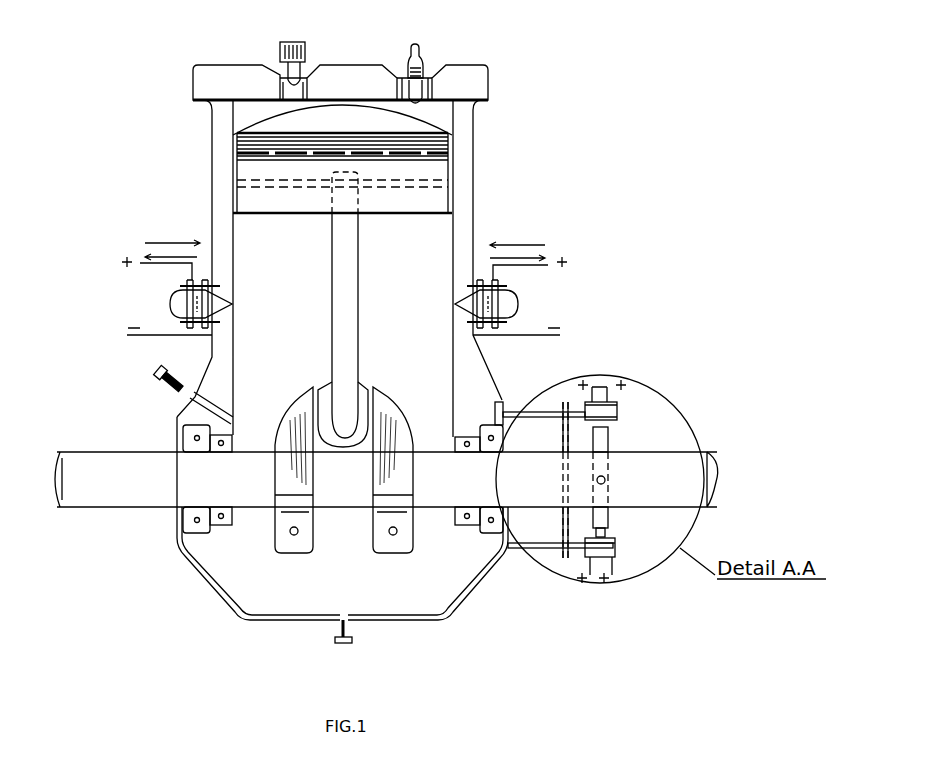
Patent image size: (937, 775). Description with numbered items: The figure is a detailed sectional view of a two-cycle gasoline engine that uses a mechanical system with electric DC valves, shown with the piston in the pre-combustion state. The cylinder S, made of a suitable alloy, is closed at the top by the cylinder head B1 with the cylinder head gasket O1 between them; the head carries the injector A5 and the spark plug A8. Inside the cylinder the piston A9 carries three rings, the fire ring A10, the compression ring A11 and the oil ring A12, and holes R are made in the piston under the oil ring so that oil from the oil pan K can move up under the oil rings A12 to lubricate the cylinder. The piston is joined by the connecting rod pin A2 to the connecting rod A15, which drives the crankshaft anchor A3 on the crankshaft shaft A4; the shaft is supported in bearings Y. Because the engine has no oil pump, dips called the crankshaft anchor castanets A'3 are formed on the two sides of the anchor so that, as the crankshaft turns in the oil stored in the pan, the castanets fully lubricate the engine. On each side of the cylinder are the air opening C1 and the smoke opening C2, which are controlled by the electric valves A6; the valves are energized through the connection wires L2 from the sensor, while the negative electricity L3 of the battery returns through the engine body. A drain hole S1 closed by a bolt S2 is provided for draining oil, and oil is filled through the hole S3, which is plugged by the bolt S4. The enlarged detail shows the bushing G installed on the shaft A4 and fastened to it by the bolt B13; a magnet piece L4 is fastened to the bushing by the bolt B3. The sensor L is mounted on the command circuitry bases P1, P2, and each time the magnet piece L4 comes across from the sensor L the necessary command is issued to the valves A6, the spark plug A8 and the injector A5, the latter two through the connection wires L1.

The cylinder head B1 is at (205, 83).
The cylinder head gasket O1 is at (488, 88).
The injector A5 is at (280, 43).
The spark plug A8 is at (418, 52).
The piston A9 is at (245, 205).
The fire ring A10 is at (237, 135).
The compression ring A11 is at (240, 143).
The oil ring A12 is at (233, 152).
The holes R is at (400, 148).
The connecting rod pin A2 is at (432, 183).
The connecting rod A15 is at (358, 258).
The smoke opening C2 is at (230, 297).
The air opening C1 is at (456, 297).
The valves A6 is at (518, 302).
The connection wires between sensor and valves L2 is at (157, 265).
The negative electricity L3 is at (127, 335).
The cylinder S is at (478, 373).
The bolt S4 is at (160, 377).
The hole S3 is at (193, 395).
The crankshaft shaft A4 is at (107, 508).
The bearing Y is at (187, 528).
The oil pan K is at (240, 583).
The hole S1 is at (340, 630).
The bolt S2 is at (345, 645).
The crankshaft anchor A3 is at (393, 533).
The crankshaft anchor castanet A'3 is at (325, 606).
The command circuitry base P2 is at (543, 412).
The command circuitry base P1 is at (540, 548).
The bolt B13 is at (603, 473).
The bushing G is at (610, 488).
The bolt B3 is at (617, 537).
The sensor L is at (618, 403).
The connection wires between sensor, injector, and spark plug L1 is at (612, 575).
The magnet piece L4 is at (617, 548).